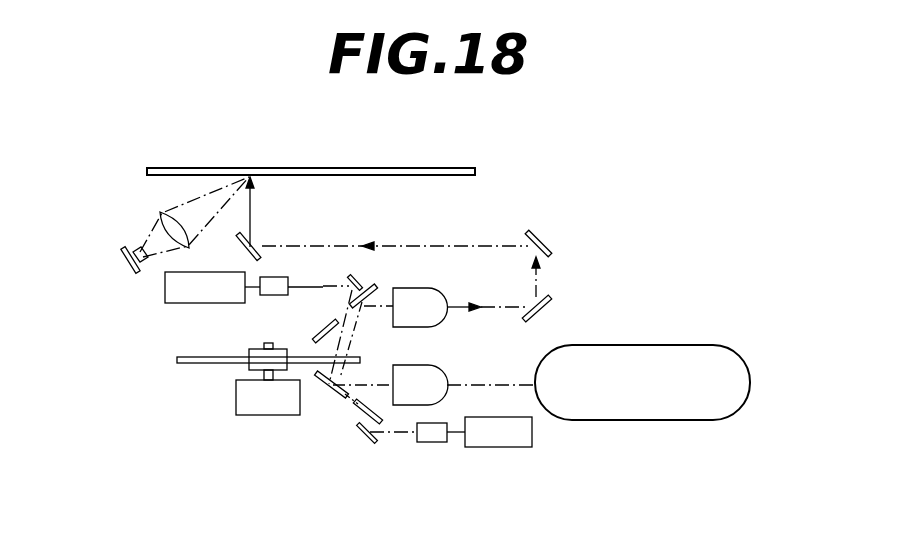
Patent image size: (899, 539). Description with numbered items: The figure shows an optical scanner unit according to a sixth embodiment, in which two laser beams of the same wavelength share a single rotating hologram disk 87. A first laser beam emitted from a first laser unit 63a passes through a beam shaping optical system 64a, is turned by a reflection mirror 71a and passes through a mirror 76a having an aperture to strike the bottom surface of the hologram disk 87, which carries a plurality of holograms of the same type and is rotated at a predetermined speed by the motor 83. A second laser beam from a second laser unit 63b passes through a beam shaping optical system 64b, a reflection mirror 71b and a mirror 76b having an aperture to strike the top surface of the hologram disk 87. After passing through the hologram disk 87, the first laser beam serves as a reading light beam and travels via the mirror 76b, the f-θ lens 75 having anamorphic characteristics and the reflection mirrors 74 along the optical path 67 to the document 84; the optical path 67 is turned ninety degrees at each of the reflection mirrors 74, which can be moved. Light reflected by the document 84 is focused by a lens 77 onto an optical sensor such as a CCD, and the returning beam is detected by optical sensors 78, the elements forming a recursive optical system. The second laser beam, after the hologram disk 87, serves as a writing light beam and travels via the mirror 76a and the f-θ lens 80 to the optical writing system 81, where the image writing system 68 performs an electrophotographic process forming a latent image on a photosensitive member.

The document 84 is at (333, 168).
The optical path 67 is at (455, 221).
The lens 77 is at (160, 214).
The optical sensors 78 is at (123, 252).
The reflection mirrors 74 is at (262, 256).
The second laser unit 63b is at (165, 297).
The beam shaping optical system 64b is at (262, 296).
The reflection mirror 71b is at (354, 276).
The mirror having an aperture 76b is at (315, 340).
The f-θ lens 75 is at (393, 322).
The f-θ lens 80 is at (431, 366).
The hologram disk 87 is at (205, 364).
The motor 83 is at (262, 416).
The mirror having an aperture 76a is at (318, 397).
The reflection mirror 71a is at (366, 443).
The beam shaping optical system 64a is at (433, 443).
The first laser unit 63a is at (510, 448).
The image writing system 68 is at (702, 316).
The optical writing system 81 is at (660, 421).